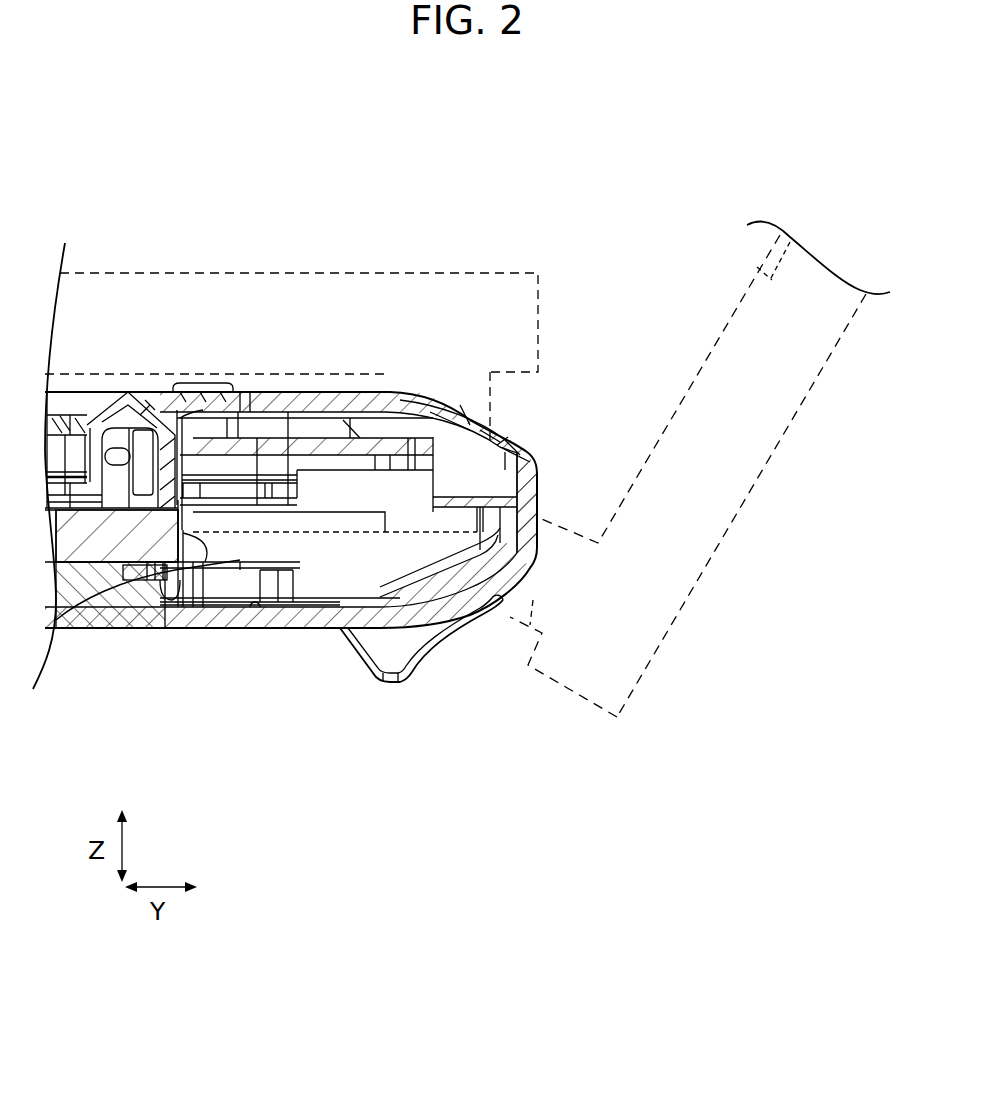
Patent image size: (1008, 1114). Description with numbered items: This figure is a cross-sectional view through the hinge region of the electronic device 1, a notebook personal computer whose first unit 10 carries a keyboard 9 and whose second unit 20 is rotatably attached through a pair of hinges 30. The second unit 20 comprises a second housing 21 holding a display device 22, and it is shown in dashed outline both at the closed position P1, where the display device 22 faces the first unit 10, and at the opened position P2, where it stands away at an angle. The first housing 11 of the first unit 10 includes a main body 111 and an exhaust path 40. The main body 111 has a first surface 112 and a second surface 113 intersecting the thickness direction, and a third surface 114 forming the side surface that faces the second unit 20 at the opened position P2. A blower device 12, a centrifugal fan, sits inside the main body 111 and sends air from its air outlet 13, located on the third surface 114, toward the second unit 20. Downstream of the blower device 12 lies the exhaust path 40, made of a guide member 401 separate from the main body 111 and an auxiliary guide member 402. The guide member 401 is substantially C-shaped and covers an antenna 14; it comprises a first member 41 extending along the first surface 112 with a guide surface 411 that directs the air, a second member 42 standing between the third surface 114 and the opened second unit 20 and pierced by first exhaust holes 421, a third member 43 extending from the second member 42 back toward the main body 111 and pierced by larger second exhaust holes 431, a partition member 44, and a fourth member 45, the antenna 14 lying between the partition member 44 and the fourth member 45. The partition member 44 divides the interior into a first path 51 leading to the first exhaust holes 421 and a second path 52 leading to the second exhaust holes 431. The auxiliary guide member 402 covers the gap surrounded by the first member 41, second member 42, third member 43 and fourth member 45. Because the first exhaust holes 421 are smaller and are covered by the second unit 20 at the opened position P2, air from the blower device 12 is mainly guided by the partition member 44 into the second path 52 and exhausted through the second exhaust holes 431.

The electronic device 1 is at (326, 160).
The closed position P1 is at (142, 262).
The opened position P2 is at (678, 640).
The keyboard 9 is at (63, 422).
The first unit 10 is at (127, 380).
The first housing 11 is at (402, 280).
The blower device 12 is at (107, 548).
The air outlet 13 is at (205, 555).
The antenna 14 is at (300, 390).
The second unit 20 is at (511, 266).
The second housing 21 is at (465, 297).
The display device 22 is at (765, 253).
The hinge 30 is at (385, 382).
The exhaust path 40 is at (397, 645).
The first member 41 is at (280, 620).
The second member 42 is at (548, 488).
The third member 43 is at (438, 400).
The partition member 44 is at (428, 514).
The fourth member 45 is at (320, 420).
The first path 51 is at (458, 558).
The second path 52 is at (490, 485).
The main body 111 is at (99, 640).
The first surface 112 is at (143, 640).
The second surface 113 is at (145, 400).
The third surface 114 is at (213, 400).
The guide member 401 is at (253, 380).
The auxiliary guide member 402 is at (335, 575).
The guide surface 411 is at (255, 607).
The first exhaust hole 421 is at (540, 548).
The second exhaust hole 431 is at (512, 432).